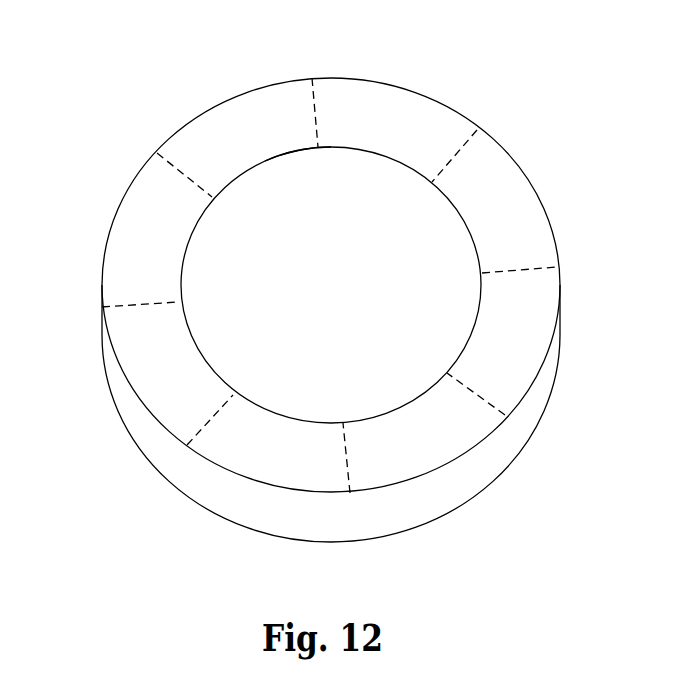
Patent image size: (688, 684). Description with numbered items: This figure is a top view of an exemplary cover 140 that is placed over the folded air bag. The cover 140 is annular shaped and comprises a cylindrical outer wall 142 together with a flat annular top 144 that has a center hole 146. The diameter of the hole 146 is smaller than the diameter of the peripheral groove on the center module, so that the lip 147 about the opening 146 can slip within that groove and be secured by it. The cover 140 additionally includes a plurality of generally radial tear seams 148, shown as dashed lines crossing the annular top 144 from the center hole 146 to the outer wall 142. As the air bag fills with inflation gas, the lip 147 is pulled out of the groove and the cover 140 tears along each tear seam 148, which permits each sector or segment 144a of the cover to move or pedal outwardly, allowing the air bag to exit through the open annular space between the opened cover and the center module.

The cover 140 is at (164, 111).
The cylindrical outer wall 142 is at (333, 525).
The flat annular top 144 is at (177, 397).
The sector 144a is at (493, 190).
The center hole 146 is at (179, 270).
The lip 147 is at (278, 171).
The tear seam 148 is at (317, 113).